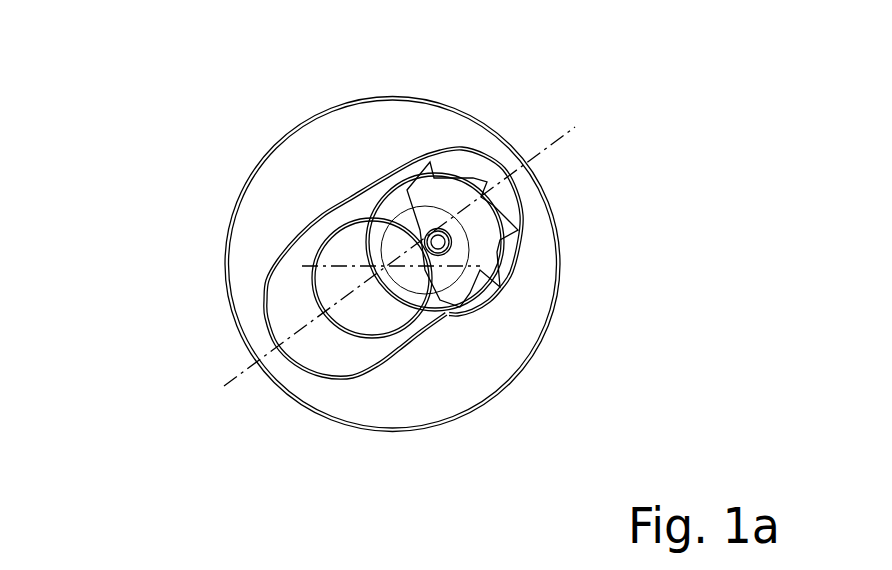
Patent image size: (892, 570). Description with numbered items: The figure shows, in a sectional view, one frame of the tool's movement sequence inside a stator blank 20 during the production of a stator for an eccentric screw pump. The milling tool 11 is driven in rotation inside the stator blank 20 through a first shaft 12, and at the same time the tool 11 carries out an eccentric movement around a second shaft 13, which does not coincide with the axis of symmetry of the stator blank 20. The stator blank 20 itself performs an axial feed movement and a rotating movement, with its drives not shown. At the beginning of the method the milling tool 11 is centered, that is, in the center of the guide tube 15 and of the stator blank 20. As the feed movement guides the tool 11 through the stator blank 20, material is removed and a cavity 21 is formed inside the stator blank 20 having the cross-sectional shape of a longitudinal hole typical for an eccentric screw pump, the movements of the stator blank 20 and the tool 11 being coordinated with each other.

The stator blank 20 is at (461, 118).
The milling tool 11 is at (473, 178).
The first shaft 12 is at (438, 242).
The second shaft 13 is at (423, 308).
The guide tube 15 is at (375, 337).
The cavity 21 is at (290, 303).